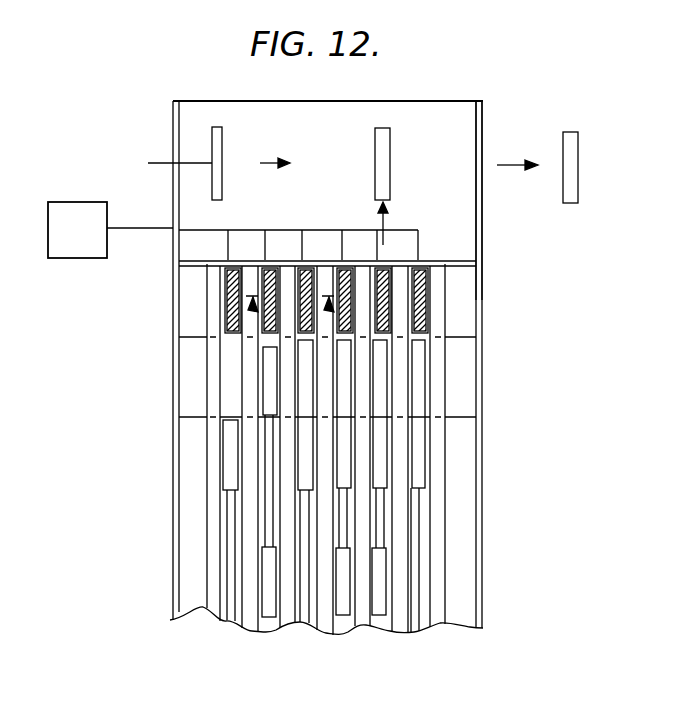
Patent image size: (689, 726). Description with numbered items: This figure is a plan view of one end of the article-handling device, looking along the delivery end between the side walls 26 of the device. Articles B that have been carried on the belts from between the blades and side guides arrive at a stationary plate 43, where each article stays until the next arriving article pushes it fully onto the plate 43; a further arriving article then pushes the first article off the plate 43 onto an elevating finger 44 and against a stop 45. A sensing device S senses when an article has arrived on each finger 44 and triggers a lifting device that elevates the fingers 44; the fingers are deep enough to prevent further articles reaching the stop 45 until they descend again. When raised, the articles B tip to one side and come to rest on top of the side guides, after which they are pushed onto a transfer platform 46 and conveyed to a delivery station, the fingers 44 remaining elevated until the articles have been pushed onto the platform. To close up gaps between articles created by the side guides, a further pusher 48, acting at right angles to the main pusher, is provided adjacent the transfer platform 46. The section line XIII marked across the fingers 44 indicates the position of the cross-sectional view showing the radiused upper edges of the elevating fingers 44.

The side walls 26 is at (172, 529).
The stationary plate 43 is at (465, 352).
The elevating finger 44 is at (388, 302).
The stop 45 is at (460, 260).
The transfer platform 46 is at (460, 123).
The further pusher 48 is at (212, 135).
The articles B is at (390, 138).
The sensing device S is at (233, 231).
The section line XIII is at (255, 313).